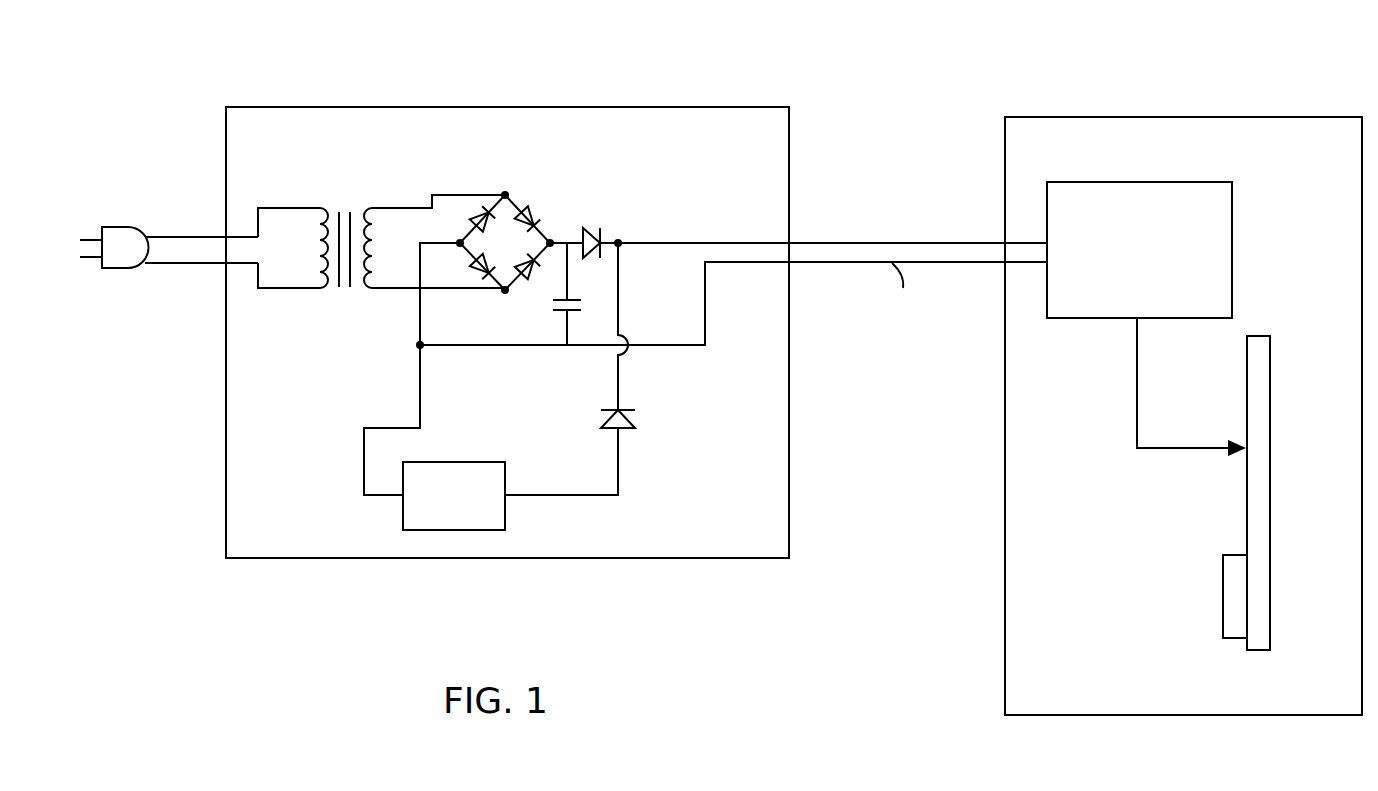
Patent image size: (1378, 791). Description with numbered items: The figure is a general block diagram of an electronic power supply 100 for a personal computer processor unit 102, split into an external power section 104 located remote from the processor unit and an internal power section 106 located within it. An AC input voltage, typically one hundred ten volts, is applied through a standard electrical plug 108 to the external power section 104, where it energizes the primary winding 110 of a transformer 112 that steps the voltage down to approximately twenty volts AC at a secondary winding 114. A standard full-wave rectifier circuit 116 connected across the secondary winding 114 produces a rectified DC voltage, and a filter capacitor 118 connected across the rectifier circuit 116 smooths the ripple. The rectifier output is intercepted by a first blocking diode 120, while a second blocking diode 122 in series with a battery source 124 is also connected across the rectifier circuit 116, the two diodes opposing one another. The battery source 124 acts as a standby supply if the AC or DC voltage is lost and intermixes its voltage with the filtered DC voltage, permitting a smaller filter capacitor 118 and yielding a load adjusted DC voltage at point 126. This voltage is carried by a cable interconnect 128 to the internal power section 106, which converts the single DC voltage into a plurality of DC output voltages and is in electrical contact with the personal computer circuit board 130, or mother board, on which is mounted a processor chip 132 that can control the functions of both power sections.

The electronic power supply 100 is at (884, 112).
The personal computer processor unit 102 is at (1116, 110).
The external power section 104 is at (335, 103).
The internal power section 106 is at (1186, 180).
The electrical plug 108 is at (113, 227).
The primary winding 110 is at (322, 290).
The transformer 112 is at (343, 202).
The secondary winding 114 is at (370, 290).
The full-wave rectifier circuit 116 is at (513, 192).
The filter capacitor 118 is at (548, 303).
The first blocking diode 120 is at (587, 230).
The second blocking diode 122 is at (627, 420).
The battery source 124 is at (507, 515).
The load adjusted DC voltage point 126 is at (722, 242).
The cable interconnect 128 is at (868, 240).
The personal computer circuit board 130 is at (1273, 375).
The processor chip 132 is at (1223, 603).